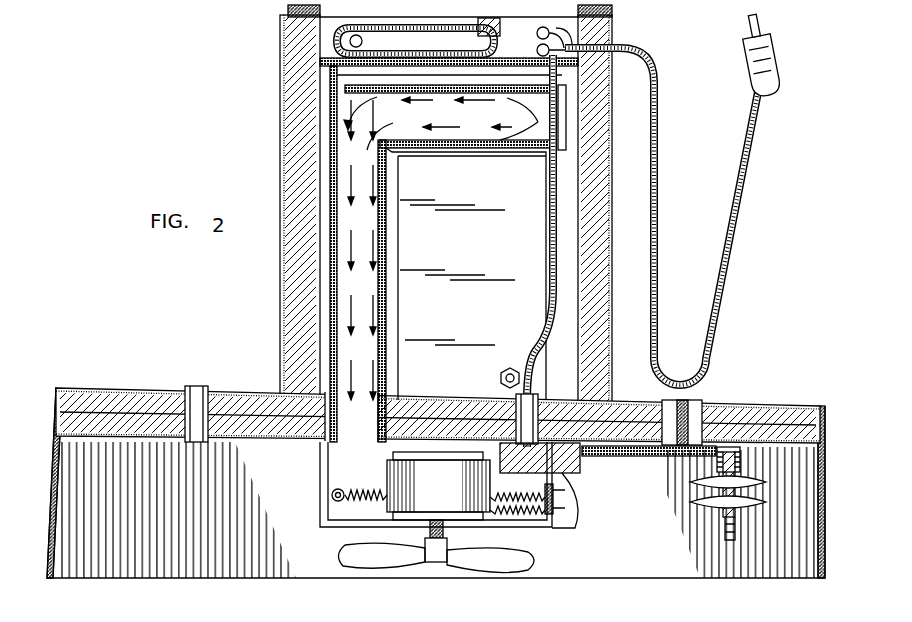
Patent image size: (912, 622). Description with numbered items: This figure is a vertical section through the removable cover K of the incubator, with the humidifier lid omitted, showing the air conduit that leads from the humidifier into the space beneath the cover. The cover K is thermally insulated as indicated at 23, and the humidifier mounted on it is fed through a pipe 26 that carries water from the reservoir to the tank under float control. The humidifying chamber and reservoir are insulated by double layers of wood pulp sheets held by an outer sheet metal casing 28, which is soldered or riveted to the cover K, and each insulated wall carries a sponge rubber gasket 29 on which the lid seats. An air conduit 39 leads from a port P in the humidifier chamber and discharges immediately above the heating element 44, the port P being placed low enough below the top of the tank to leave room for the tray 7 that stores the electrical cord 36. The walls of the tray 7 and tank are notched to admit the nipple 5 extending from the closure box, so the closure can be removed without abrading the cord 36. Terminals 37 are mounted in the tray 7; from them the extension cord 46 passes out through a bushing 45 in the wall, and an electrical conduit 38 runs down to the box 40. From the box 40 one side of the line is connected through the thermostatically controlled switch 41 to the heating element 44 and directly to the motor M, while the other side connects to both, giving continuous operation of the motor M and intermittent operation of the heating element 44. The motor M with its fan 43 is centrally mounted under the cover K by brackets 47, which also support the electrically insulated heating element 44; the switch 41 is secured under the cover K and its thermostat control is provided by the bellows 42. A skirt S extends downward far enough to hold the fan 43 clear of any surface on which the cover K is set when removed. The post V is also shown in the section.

The gasket 29 is at (292, 9).
The electrical cord 36 is at (338, 41).
The tray 7 is at (322, 74).
The outer sheet metal casing 28 is at (279, 142).
The nipple 5 is at (500, 30).
The terminals 37 is at (598, 12).
The bushing 45 is at (612, 78).
The extension cord 46 is at (742, 150).
The port P is at (535, 137).
The air conduit 39 is at (388, 240).
The electrical conduit 38 is at (546, 308).
The pipe 26 is at (501, 374).
The vent post V is at (195, 386).
The removable cover K is at (727, 400).
The thermal insulation 23 is at (778, 420).
The brackets 47 is at (332, 492).
The heating element 44 is at (362, 490).
The motor M is at (438, 486).
The box 40 is at (580, 472).
The thermostatically controlled switch 41 is at (714, 470).
The bellows 42 is at (708, 510).
The fan 43 is at (530, 554).
The skirt S is at (167, 578).